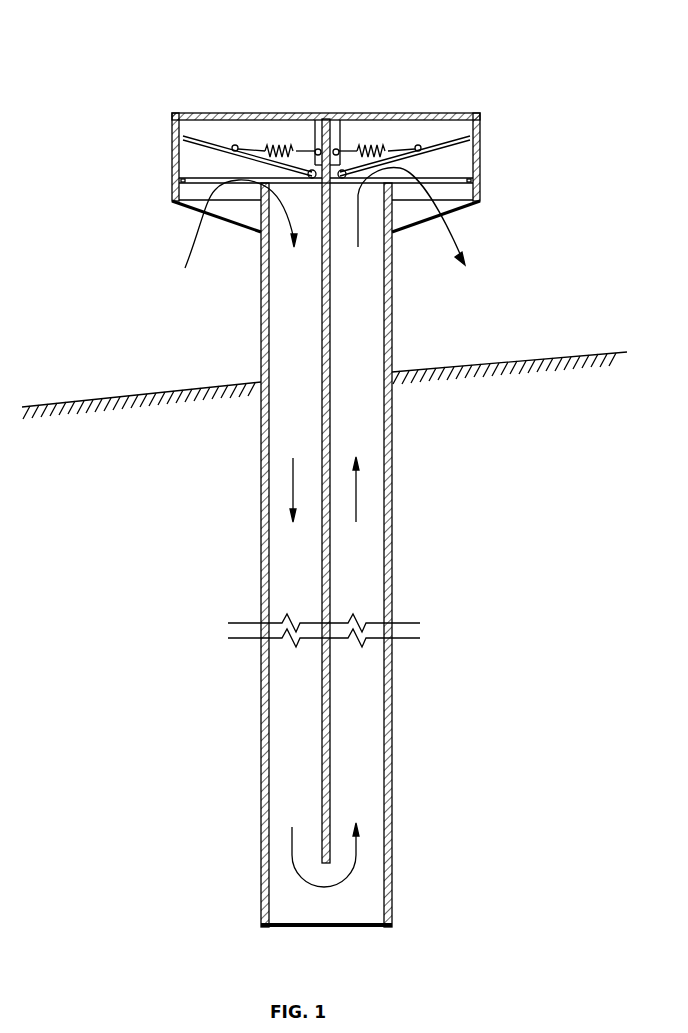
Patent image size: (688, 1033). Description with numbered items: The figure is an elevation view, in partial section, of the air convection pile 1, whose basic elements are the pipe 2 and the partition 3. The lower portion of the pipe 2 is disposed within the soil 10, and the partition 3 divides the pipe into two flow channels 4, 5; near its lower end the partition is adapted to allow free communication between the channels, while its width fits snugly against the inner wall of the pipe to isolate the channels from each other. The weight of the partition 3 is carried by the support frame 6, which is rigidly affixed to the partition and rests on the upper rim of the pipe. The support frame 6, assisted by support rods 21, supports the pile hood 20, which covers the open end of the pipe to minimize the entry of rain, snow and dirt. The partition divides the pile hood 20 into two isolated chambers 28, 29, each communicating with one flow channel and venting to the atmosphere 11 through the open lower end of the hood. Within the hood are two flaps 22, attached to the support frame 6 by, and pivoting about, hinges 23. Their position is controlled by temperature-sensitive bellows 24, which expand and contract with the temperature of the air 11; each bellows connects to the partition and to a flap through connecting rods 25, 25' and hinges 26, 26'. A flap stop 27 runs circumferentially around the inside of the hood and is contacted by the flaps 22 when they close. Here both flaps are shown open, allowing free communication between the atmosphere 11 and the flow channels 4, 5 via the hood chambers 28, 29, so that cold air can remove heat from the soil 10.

The air convection pile 1 is at (470, 511).
The pipe 2 is at (261, 290).
The partition 3 is at (321, 326).
The flow channel 4 is at (299, 401).
The flow channel 5 is at (361, 401).
The support frame 6 is at (353, 140).
The soil 10 is at (90, 506).
The atmosphere 11 is at (88, 277).
The pile hood 20 is at (284, 113).
The support rods 21 is at (462, 212).
The flaps 22 is at (480, 146).
The hinges 23 is at (335, 184).
The temperature-sensitive bellows 24 is at (393, 140).
The connecting rod 25 is at (326, 107).
The connecting rod 25' is at (390, 122).
The hinge 26 is at (299, 104).
The hinge 26' is at (409, 134).
The flap stop 27 is at (480, 190).
The chamber 28 is at (203, 171).
The chamber 29 is at (465, 171).